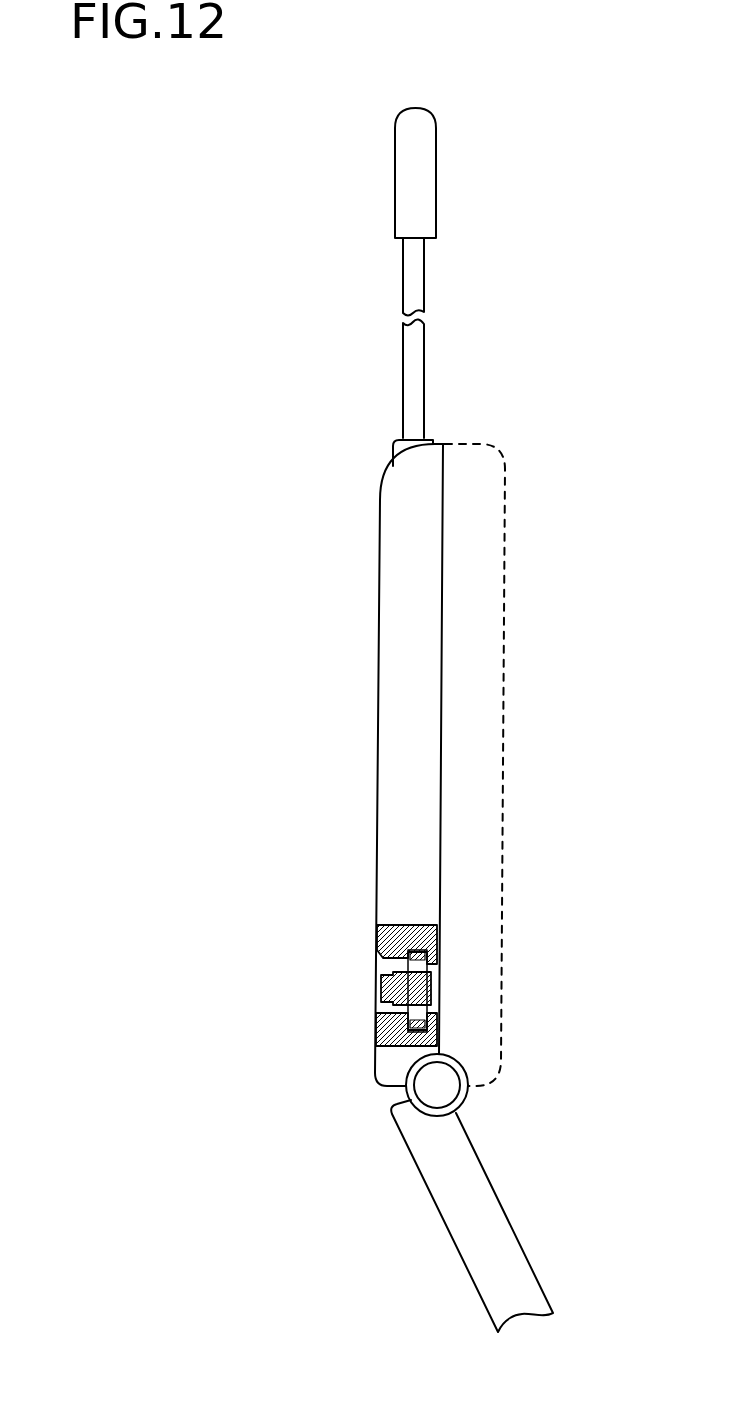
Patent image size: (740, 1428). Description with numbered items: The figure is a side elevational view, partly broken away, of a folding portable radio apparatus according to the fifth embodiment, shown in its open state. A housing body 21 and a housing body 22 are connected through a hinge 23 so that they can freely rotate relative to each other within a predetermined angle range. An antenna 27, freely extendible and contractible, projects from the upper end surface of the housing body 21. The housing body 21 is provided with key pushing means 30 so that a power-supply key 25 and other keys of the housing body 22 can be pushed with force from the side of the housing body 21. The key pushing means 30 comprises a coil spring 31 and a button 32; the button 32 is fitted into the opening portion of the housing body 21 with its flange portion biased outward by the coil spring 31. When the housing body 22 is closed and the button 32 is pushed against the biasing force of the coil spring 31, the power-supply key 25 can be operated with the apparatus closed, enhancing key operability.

The housing body 21 is at (443, 536).
The housing body 22 is at (507, 1207).
The hinge 23 is at (405, 1093).
The power-supply key 25 is at (440, 983).
The antenna 27 is at (436, 178).
The key pushing means 30 is at (410, 972).
The coil spring 31 is at (412, 924).
The button 32 is at (382, 988).